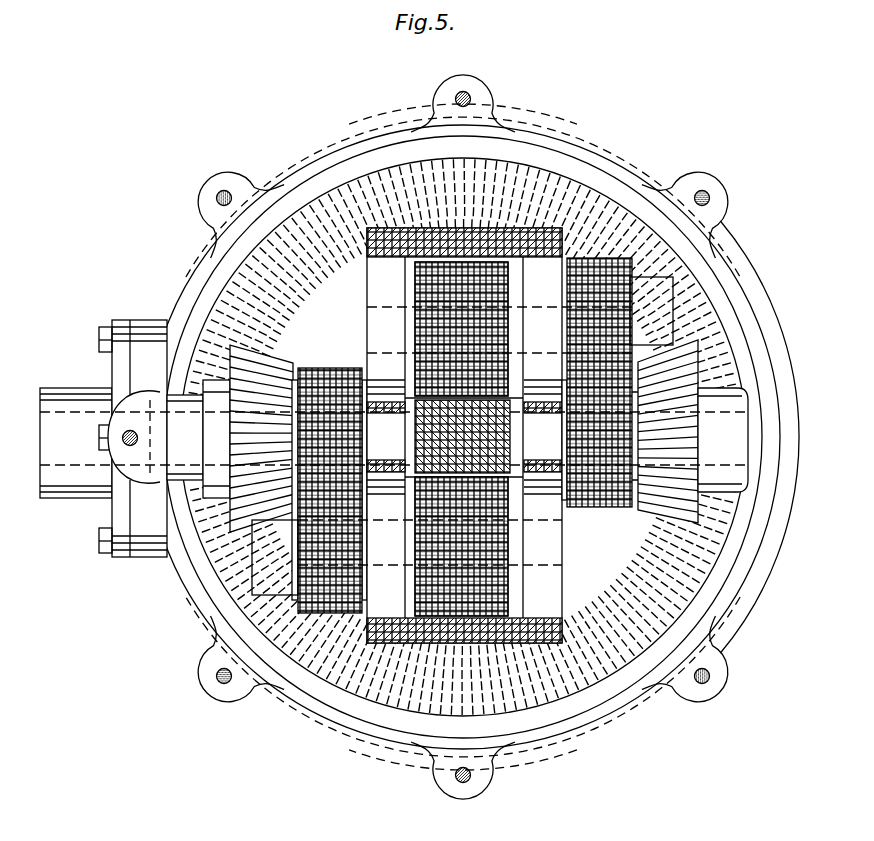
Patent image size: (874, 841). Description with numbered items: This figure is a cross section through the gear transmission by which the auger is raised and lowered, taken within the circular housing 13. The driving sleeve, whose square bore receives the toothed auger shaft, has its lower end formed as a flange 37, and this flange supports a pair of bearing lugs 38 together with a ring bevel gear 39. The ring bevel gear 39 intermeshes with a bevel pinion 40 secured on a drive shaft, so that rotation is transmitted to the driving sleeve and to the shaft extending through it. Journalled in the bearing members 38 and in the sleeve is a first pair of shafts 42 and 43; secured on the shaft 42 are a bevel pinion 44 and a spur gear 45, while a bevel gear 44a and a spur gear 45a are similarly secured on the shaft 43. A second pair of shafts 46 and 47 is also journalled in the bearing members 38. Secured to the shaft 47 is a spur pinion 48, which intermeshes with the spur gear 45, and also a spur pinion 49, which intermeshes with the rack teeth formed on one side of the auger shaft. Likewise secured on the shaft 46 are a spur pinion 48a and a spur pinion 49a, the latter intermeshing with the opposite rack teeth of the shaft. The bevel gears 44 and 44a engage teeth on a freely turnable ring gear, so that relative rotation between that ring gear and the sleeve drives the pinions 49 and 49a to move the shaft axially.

The casing 13 is at (760, 573).
The flange 37 is at (512, 738).
The bearing lugs 38 is at (252, 590).
The ring bevel gear 39 is at (422, 704).
The bevel pinion 40 is at (185, 380).
The shaft 42 is at (386, 437).
The shaft 43 is at (543, 437).
The bevel pinion 44 is at (300, 352).
The bevel gear 44a is at (641, 512).
The spur gear 45 is at (329, 479).
The spur gear 45a is at (572, 508).
The shaft 46 is at (367, 335).
The shaft 47 is at (567, 540).
The spur pinion 48 is at (420, 540).
The spur pinion 48a is at (485, 329).
The spur pinion 49 is at (495, 537).
The spur pinion 49a is at (495, 340).